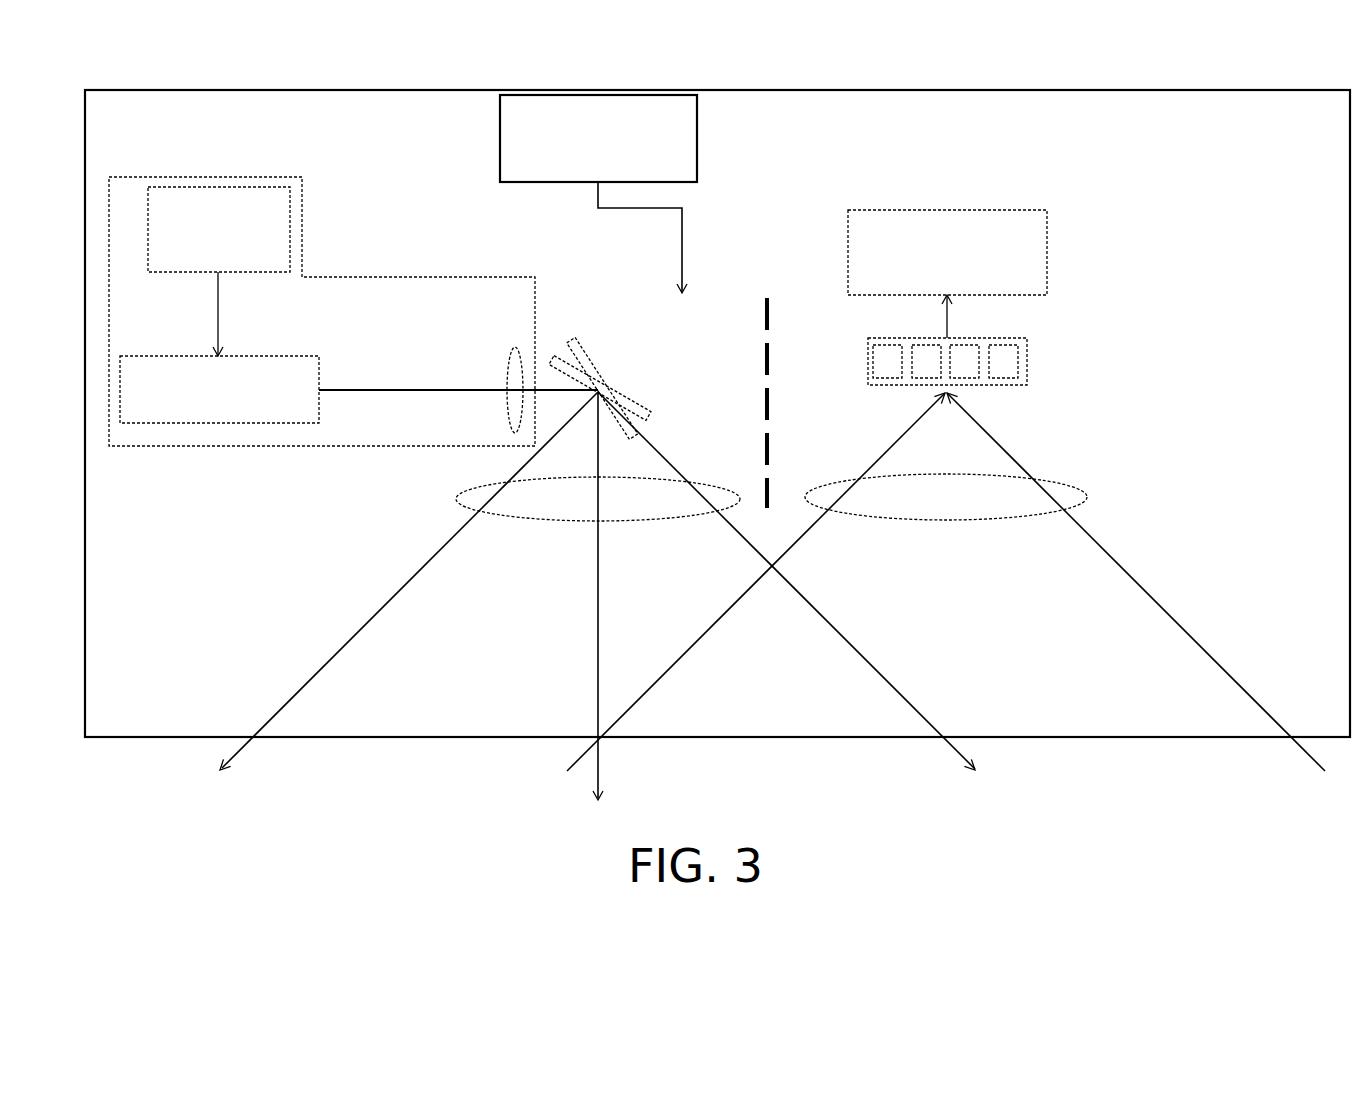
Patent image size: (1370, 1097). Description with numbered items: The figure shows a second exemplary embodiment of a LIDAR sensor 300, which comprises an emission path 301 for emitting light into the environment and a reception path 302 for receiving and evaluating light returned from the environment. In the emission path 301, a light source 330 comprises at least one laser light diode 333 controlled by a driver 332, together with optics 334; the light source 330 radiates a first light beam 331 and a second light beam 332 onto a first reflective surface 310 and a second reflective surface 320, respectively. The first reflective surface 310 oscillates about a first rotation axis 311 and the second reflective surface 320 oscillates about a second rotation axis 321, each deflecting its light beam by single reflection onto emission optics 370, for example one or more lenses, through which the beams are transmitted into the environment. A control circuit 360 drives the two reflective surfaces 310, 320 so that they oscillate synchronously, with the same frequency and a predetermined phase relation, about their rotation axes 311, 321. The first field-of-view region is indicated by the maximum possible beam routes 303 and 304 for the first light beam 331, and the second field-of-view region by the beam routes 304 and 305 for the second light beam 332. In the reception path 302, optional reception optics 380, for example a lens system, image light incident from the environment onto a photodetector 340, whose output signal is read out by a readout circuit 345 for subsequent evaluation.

The LIDAR sensor 300 is at (1240, 43).
The emission path 301 is at (503, 90).
The reception path 302 is at (953, 90).
The beam route 303 is at (312, 680).
The beam route 304 is at (597, 697).
The beam route 305 is at (896, 688).
The first reflective surface 310 is at (726, 303).
The first rotation axis 311 is at (598, 383).
The second reflective surface 320 is at (683, 374).
The second rotation axis 321 is at (602, 388).
The light source 330 is at (227, 447).
The first light beam 331 is at (548, 387).
The driver 332 is at (197, 273).
The laser light diode 333 is at (255, 356).
The optics 334 is at (508, 405).
The photodetector 340 is at (950, 328).
The readout circuit 345 is at (1049, 255).
The control circuit 360 is at (699, 140).
The emission optics 370 is at (458, 498).
The reception optics 380 is at (1062, 481).